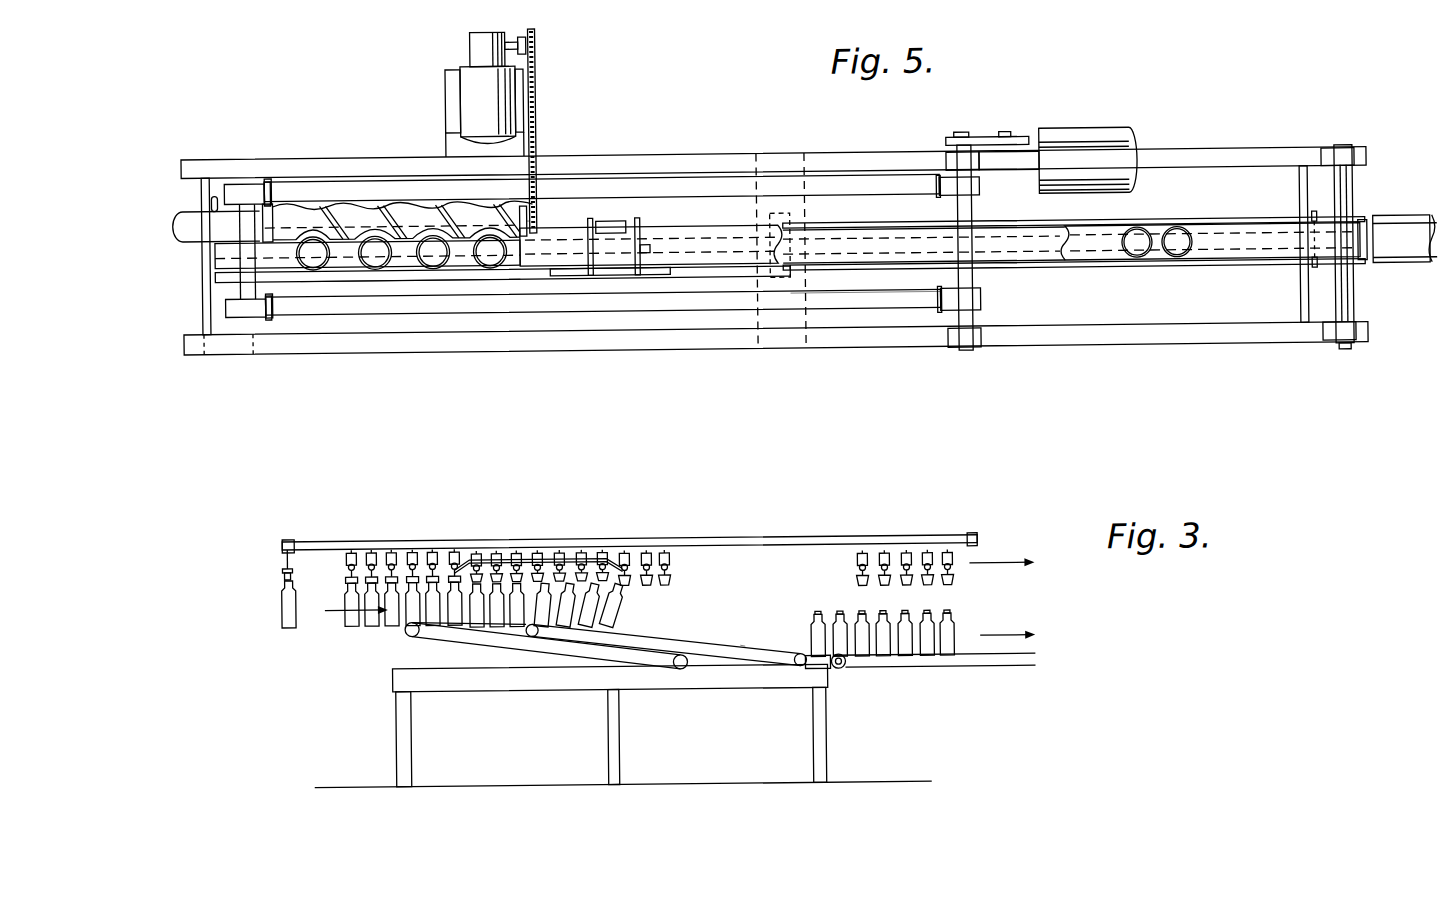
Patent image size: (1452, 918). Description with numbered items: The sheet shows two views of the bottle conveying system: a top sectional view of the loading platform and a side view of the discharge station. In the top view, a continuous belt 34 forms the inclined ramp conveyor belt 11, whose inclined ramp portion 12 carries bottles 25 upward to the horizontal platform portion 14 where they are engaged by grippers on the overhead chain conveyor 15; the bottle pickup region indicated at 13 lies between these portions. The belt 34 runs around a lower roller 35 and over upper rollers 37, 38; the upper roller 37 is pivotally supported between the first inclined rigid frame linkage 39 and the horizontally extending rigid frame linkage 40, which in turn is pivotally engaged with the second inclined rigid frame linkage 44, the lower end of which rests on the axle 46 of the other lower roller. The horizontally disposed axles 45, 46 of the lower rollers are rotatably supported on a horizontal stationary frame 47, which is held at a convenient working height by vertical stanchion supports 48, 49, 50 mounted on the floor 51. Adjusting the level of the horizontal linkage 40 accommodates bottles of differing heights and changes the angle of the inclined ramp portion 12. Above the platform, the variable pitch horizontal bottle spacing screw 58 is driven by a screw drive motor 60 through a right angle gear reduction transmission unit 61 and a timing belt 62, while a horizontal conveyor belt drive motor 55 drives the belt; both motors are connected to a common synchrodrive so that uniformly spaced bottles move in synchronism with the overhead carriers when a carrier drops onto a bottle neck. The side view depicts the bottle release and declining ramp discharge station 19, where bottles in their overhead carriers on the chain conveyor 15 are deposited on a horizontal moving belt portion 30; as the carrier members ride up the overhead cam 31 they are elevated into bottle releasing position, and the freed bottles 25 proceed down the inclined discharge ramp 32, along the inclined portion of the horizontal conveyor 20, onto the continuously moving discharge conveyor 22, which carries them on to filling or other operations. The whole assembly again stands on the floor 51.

In FIG. 5, the inclined ramp conveyor belt 11 is at (535, 272).
In FIG. 5, the inclined ramp portion 12 is at (1003, 281).
In FIG. 5, the feed mechanism 13 is at (568, 227).
In FIG. 5, the horizontal platform portion 14 is at (343, 278).
In FIG. 3, the overhead chain conveyor 15 is at (318, 543).
In FIG. 3, the bottle release and declining ramp discharge station 19 is at (611, 534).
In FIG. 3, the horizontal conveyor 20 is at (744, 648).
In FIG. 3, the discharge conveyor 22 is at (985, 677).
In FIG. 5, the bottles 25 is at (1158, 241).
In FIG. 3, the bottles 25 is at (955, 628).
In FIG. 3, the horizontal moving belt portion 30 is at (470, 635).
In FIG. 3, the overhead cam 31 is at (507, 550).
In FIG. 3, the inclined discharge ramp 32 is at (675, 639).
In FIG. 5, the continuous belt 34 is at (695, 244).
In FIG. 5, the lower roller 35 is at (1320, 275).
In FIG. 5, the upper roller 37 is at (655, 275).
In FIG. 5, the upper roller 38 is at (215, 257).
In FIG. 5, the first inclined rigid frame linkage 39 is at (860, 270).
In FIG. 5, the horizontally extending rigid frame linkage 40 is at (455, 273).
In FIG. 5, the second inclined rigid frame linkage 44 is at (688, 196).
In FIG. 5, the axle 45 is at (1342, 313).
In FIG. 5, the axle 46 is at (975, 216).
In FIG. 5, the horizontal stationary frame 47 is at (845, 162).
In FIG. 5, the vertical stanchion support 48 is at (1305, 318).
In FIG. 5, the vertical stanchion support 49 is at (765, 319).
In FIG. 5, the vertical stanchion support 50 is at (205, 315).
In FIG. 3, the floor 51 is at (685, 784).
In FIG. 5, the horizontal conveyor belt drive motor 55 is at (1100, 138).
In FIG. 5, the variable pitch horizontal bottle spacing screw 58 is at (350, 207).
In FIG. 5, the screw drive motor 60 is at (455, 100).
In FIG. 5, the right angle gear reduction transmission unit 61 is at (480, 47).
In FIG. 5, the timing belt 62 is at (540, 109).